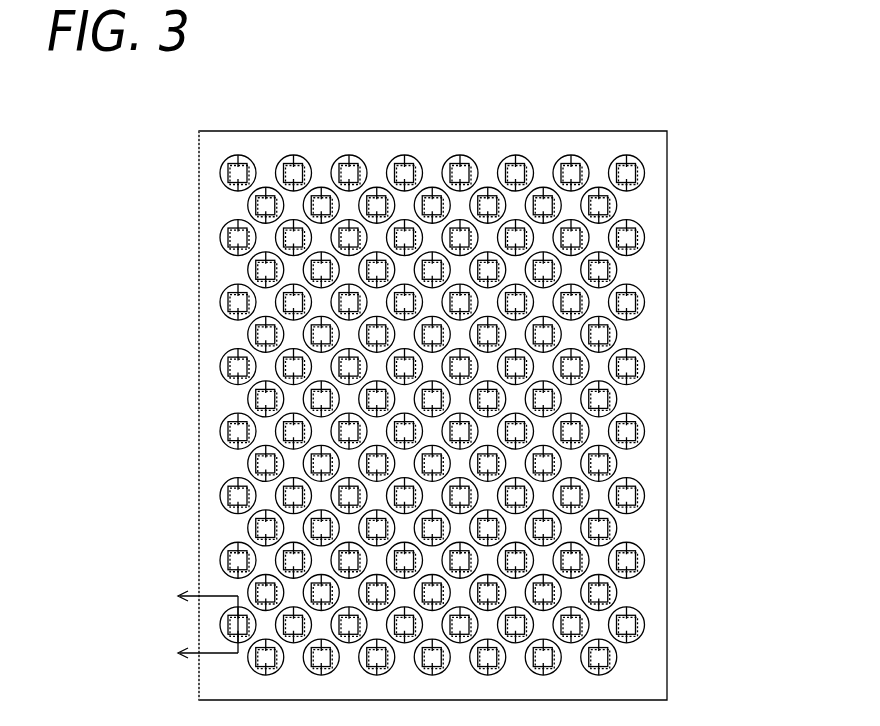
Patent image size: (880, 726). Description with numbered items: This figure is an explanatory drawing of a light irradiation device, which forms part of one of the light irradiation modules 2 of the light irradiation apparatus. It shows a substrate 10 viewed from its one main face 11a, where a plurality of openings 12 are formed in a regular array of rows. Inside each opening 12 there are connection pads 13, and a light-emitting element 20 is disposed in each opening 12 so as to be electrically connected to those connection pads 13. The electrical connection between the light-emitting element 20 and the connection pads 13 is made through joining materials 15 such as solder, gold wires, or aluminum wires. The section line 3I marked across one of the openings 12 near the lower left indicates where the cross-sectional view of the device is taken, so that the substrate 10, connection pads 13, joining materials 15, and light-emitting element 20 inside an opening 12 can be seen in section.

The light irradiation module 2 is at (592, 88).
The substrate 10 is at (668, 323).
The main face 11a is at (645, 275).
The opening 12 is at (646, 170).
The connection pad 13 is at (237, 620).
The joining material 15 is at (349, 166).
The light-emitting element 20 is at (240, 167).
The section line 3I is at (190, 625).